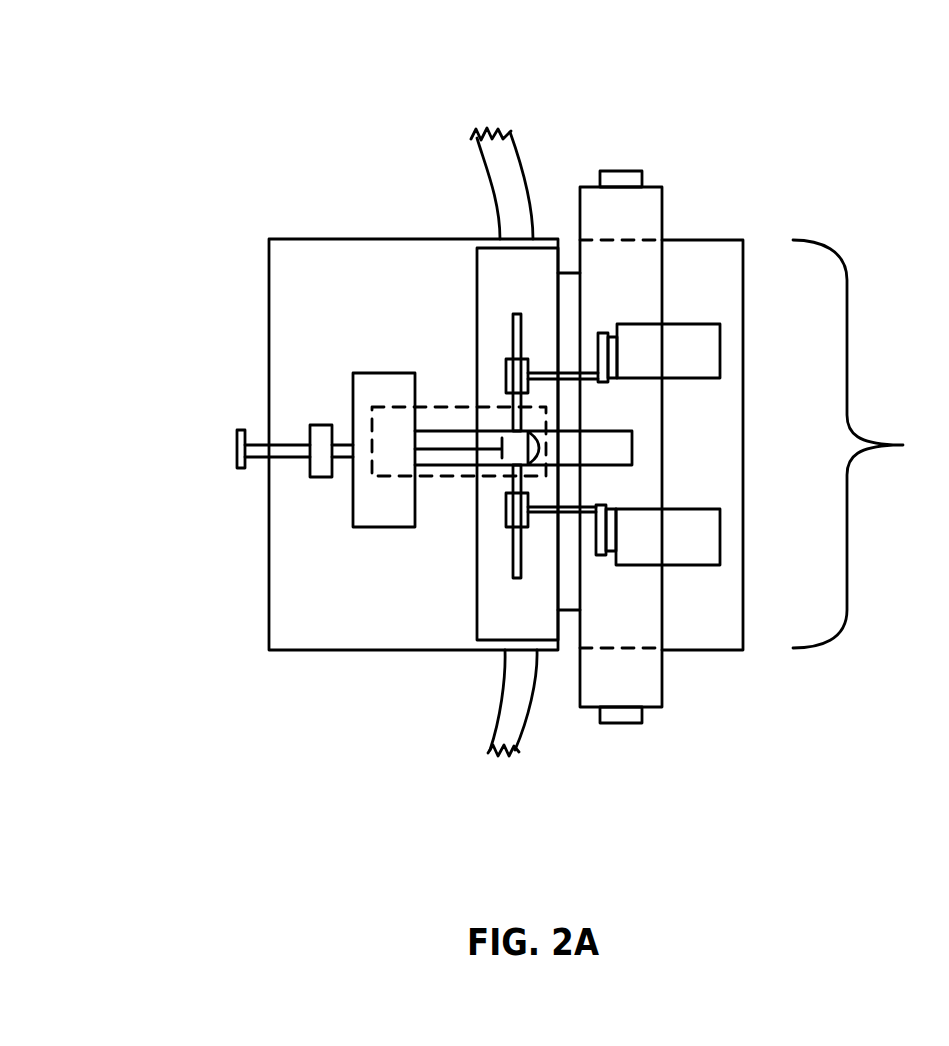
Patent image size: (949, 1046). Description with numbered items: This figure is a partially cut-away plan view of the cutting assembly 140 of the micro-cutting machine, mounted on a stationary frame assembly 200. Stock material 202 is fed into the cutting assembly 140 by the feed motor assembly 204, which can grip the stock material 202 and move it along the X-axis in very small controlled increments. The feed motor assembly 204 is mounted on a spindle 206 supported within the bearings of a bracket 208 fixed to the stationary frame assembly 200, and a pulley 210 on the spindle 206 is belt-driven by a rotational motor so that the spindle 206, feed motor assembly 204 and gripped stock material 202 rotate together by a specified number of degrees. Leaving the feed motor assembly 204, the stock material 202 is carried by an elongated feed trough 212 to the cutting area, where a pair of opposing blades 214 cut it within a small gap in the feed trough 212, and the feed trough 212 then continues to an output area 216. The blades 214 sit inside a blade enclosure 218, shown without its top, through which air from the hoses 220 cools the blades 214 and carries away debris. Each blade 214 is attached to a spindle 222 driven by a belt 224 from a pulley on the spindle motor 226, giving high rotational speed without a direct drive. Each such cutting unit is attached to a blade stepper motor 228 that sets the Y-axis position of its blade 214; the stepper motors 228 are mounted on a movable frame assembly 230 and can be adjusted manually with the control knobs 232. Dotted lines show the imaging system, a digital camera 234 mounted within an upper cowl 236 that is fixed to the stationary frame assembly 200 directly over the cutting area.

The cutting assembly 140 is at (782, 195).
The stationary frame assembly 200 is at (310, 238).
The stock material 202 is at (310, 447).
The feed motor assembly 204 is at (385, 373).
The spindle 206 is at (277, 458).
The bracket 208 is at (317, 478).
The pulley 210 is at (233, 450).
The feed trough 212 is at (452, 432).
The blades 214 is at (523, 545).
The output area 216 is at (752, 444).
The blade enclosure 218 is at (483, 240).
The hoses 220 is at (520, 142).
The spindle 222 is at (557, 375).
The belt 224 is at (602, 333).
The spindle motor 226 is at (680, 323).
The blade stepper motor 228 is at (663, 672).
The movable frame assembly 230 is at (745, 612).
The control knobs 232 is at (618, 723).
The digital camera 234 is at (507, 468).
The upper cowl 236 is at (395, 477).